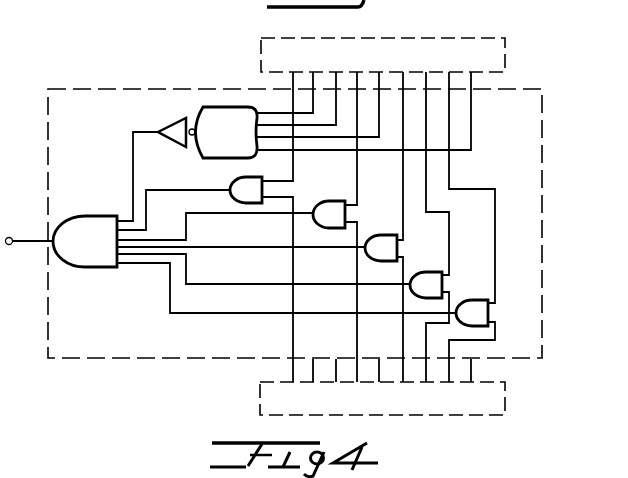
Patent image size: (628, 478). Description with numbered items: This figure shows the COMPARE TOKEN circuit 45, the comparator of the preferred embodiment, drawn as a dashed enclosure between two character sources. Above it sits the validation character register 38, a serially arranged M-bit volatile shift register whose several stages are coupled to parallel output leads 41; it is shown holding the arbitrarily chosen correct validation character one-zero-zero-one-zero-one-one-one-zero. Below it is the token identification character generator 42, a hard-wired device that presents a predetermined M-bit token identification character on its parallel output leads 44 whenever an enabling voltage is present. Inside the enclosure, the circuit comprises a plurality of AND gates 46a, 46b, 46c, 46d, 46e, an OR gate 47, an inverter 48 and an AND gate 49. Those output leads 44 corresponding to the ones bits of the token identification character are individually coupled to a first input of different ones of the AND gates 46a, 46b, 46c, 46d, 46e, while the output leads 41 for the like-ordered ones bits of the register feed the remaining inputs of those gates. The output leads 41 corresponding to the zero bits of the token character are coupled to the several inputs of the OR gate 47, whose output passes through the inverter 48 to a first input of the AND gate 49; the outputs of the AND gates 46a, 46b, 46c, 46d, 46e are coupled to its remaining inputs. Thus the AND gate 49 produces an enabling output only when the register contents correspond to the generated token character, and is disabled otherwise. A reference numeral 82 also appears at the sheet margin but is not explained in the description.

The validation character register 38 is at (508, 50).
The parallel output leads 41 is at (450, 84).
The token identification character generator 42 is at (260, 393).
The parallel output leads 44 is at (472, 365).
The COMPARE TOKEN circuit 45 is at (542, 133).
The AND gate 46a is at (232, 186).
The AND gate 46b is at (330, 212).
The AND gate 46c is at (384, 248).
The AND gate 46d is at (426, 285).
The AND gate 46e is at (474, 312).
The OR gate 47 is at (228, 118).
The inverter 48 is at (160, 123).
The AND gate 49 is at (98, 268).
The sheet reference / signal line 82 is at (560, 477).